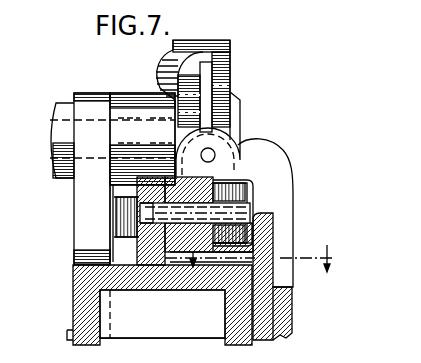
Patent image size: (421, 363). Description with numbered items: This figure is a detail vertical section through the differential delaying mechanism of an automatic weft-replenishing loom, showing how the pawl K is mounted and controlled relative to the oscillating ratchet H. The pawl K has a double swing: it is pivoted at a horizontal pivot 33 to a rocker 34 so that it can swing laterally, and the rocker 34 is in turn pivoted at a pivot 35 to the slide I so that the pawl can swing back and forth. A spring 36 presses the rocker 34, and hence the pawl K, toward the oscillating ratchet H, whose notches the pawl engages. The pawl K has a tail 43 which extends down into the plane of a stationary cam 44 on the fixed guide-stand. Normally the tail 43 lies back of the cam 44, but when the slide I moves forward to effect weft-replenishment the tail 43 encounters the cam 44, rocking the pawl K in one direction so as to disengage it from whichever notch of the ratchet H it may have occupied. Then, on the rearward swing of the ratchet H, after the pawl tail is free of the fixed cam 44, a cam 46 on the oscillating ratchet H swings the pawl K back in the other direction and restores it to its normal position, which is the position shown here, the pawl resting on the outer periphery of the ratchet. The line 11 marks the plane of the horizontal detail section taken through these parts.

The slide I is at (87, 285).
The oscillating ratchet H is at (220, 47).
The pawl K is at (262, 160).
The cam 46 is at (167, 66).
The pivot 33 is at (209, 154).
The spring 36 is at (248, 190).
The pivot 35 is at (228, 214).
The stationary cam 44 is at (270, 227).
The tail 43 is at (283, 268).
The rocker 34 is at (184, 252).
The section line 11— 11 is at (193, 266).